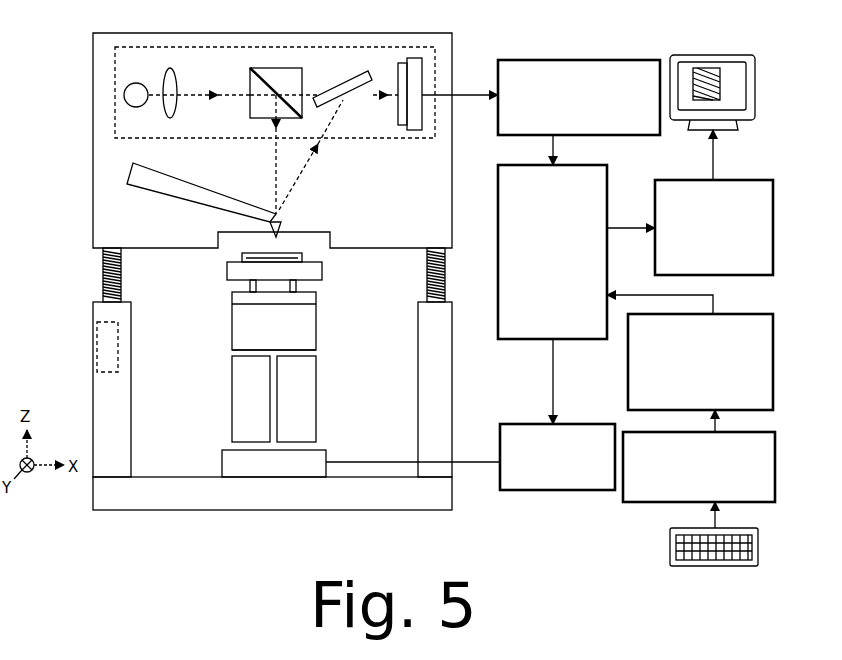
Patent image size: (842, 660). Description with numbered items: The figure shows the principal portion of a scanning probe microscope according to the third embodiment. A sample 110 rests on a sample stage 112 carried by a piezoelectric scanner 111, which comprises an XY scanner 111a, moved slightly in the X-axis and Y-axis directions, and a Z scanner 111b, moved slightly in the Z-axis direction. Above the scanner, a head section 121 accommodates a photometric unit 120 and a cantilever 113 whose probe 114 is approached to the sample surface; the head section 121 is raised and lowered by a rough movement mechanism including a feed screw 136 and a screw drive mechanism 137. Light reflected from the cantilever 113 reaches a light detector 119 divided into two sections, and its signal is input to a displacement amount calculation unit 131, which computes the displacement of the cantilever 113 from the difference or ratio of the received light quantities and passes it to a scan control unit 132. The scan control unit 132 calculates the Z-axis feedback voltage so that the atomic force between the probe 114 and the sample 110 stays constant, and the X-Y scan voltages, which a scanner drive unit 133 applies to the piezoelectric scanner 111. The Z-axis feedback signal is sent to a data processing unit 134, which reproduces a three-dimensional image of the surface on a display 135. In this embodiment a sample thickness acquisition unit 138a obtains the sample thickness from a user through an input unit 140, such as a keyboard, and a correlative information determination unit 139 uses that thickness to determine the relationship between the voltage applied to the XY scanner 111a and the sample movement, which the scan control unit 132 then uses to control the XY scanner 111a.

The sample 110 is at (242, 258).
The piezoelectric scanner 111 is at (319, 384).
The XY scanner 111a is at (317, 400).
The Z scanner 111b is at (317, 338).
The sample stage 112 is at (230, 282).
The cantilever 113 is at (268, 214).
The probe 114 is at (283, 226).
The light detector 119 is at (400, 62).
The photometric unit 120 is at (222, 47).
The head section 121 is at (93, 157).
The displacement amount calculation unit 131 is at (581, 60).
The scan control unit 132 is at (610, 196).
The scanner drive unit 133 is at (521, 492).
The data processing unit 134 is at (774, 250).
The display 135 is at (733, 58).
The feed screw 136 is at (103, 277).
The screw drive mechanism 137 is at (118, 355).
The sample thickness acquisition unit 138a is at (777, 478).
The correlative information determination unit 139 is at (775, 392).
The input unit 140 is at (760, 545).